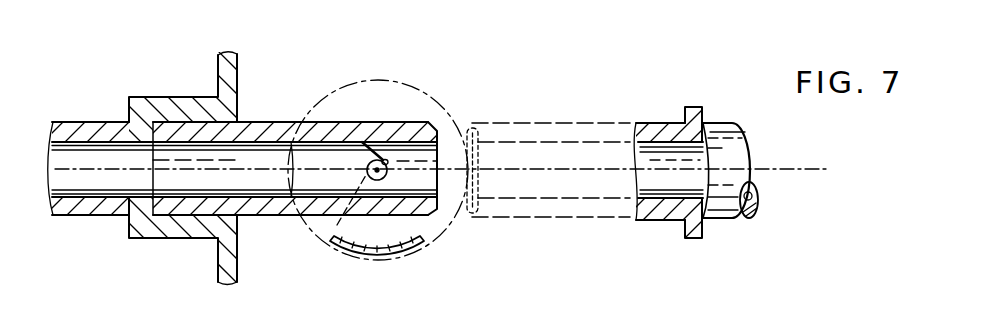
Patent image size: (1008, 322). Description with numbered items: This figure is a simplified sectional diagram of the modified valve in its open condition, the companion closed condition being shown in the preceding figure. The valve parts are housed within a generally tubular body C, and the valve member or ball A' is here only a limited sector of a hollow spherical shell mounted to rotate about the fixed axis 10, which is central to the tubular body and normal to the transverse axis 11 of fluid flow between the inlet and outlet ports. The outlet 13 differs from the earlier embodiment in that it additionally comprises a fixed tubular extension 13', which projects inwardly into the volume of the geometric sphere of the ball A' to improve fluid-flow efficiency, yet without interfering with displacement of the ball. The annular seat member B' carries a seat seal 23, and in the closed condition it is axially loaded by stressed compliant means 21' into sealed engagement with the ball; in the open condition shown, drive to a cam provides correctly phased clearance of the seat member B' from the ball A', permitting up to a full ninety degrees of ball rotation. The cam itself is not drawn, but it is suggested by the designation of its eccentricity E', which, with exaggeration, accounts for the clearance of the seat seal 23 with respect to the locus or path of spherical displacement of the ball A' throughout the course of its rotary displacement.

The outlet port 13 is at (86, 184).
The fixed tubular extension 13' is at (251, 209).
The tubular body C is at (215, 70).
The fixed axis 10 is at (386, 178).
The eccentricity E' is at (332, 151).
The ball A' is at (378, 265).
The seat seal 23 is at (490, 216).
The annular seat member B' is at (551, 156).
The transverse axis 11 is at (792, 172).
The stressed compliant means 21' is at (730, 173).